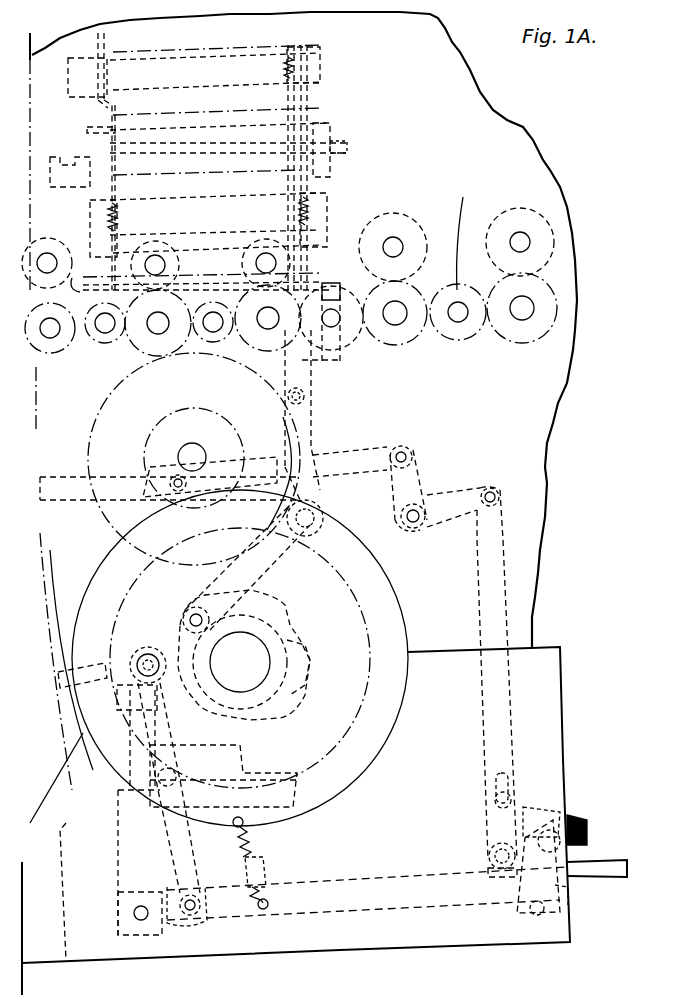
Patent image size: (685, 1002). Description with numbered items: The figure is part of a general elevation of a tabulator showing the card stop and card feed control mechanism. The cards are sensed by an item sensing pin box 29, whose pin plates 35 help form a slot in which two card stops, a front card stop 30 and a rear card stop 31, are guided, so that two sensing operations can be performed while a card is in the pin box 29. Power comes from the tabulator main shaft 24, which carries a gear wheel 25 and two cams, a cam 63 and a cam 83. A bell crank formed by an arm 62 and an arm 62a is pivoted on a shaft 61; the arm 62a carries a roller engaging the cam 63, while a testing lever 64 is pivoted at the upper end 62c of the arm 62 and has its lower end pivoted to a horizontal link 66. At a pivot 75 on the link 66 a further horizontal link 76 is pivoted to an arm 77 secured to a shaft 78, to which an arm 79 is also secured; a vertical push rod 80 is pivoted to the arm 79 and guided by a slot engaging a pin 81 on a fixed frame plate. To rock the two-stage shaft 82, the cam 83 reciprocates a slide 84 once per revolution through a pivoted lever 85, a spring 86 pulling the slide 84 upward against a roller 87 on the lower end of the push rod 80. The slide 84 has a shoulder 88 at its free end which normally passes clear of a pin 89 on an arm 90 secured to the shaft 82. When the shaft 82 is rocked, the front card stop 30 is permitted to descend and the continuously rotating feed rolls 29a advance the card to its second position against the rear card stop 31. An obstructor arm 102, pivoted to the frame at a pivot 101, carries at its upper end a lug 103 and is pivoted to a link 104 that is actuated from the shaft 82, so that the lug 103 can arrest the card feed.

The item sensing pin box 29 is at (230, 75).
The feed rolls 29a is at (415, 225).
The front card stop 30 is at (328, 290).
The rear card stop 31 is at (333, 292).
The pin plates 35 is at (217, 283).
The testing lever 64 is at (340, 360).
The upper end of arm 62c is at (305, 395).
The bell crank arm 62 is at (312, 445).
The horizontal link 76 is at (377, 460).
The arm 77 is at (413, 480).
The shaft 78 is at (433, 540).
The arm 79 is at (448, 508).
The vertical push rod 80 is at (500, 607).
The pin 81 is at (517, 797).
The two-stage shaft 82 is at (590, 830).
The shoulder 88 is at (567, 882).
The arm 90 is at (568, 910).
The pin 89 is at (520, 910).
The slide 84 is at (392, 888).
The roller 87 is at (490, 855).
The spring 86 is at (264, 868).
The pivoted lever 85 is at (180, 868).
The pivot 101 is at (135, 912).
The obstructor arm 102 is at (113, 793).
The lug 103 is at (127, 653).
The link 104 is at (275, 772).
The tabulator main shaft 24 is at (262, 675).
The gear wheel 25 is at (340, 752).
The cam 63 is at (318, 660).
The cam 83 is at (287, 610).
The bell crank arm 62a is at (273, 557).
The shaft 61 is at (323, 510).
The horizontal link 66 is at (52, 477).
The pivot 75 is at (165, 470).